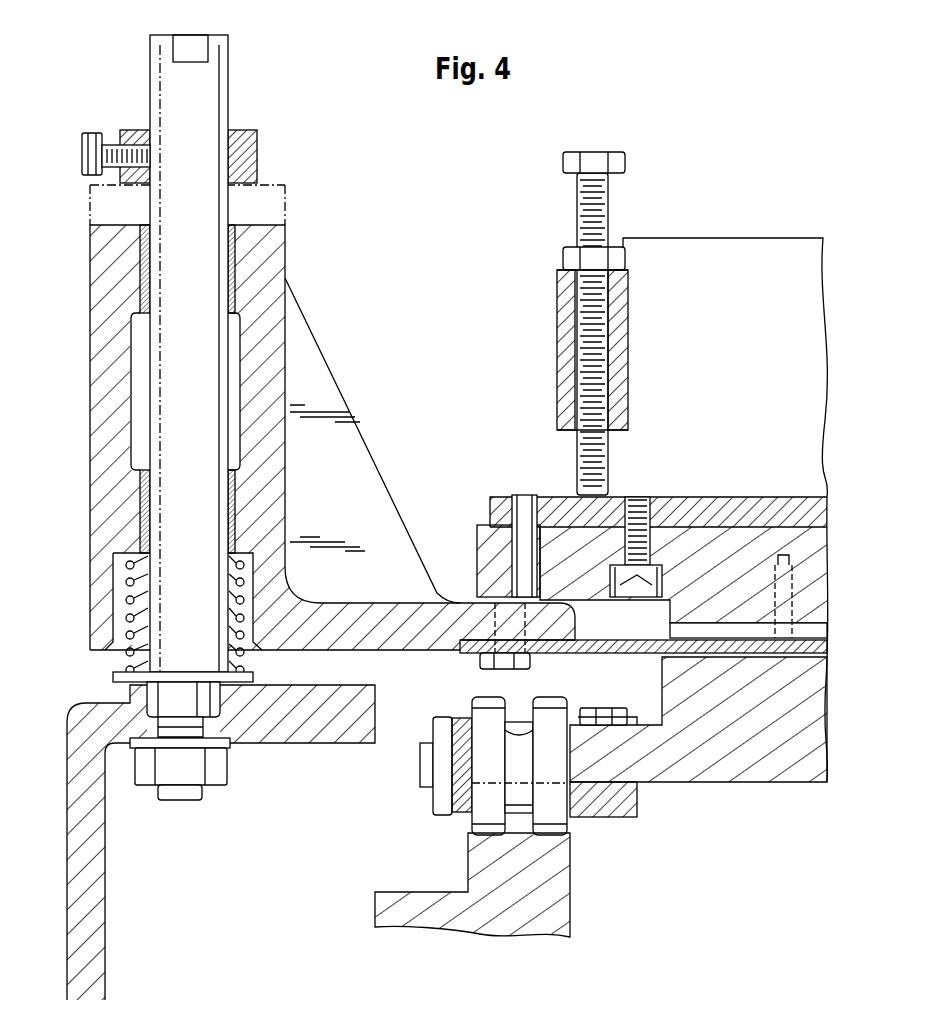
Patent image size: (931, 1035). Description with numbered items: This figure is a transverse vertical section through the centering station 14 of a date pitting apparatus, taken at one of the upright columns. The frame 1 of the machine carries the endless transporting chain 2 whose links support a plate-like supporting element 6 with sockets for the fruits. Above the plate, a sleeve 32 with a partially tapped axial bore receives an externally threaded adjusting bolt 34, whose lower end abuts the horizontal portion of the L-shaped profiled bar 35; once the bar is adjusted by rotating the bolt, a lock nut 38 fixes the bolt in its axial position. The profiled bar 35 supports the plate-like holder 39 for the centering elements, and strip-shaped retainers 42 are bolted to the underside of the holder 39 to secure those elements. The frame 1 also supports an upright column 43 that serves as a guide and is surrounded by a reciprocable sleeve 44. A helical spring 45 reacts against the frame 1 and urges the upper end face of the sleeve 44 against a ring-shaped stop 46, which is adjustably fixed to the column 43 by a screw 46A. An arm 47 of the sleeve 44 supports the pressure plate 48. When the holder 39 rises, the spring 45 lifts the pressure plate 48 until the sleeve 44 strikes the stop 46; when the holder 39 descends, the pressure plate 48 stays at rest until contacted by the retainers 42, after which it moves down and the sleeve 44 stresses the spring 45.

The frame 1 is at (90, 843).
The transporting chain 2 is at (436, 800).
The supporting element 6 is at (727, 755).
The centering station 14 is at (723, 232).
The sleeve 32 is at (560, 330).
The adjusting bolt 34 is at (588, 198).
The profiled bar 35 is at (713, 505).
The lock nut 38 is at (568, 257).
The holder 39 is at (485, 547).
The retainer 42 is at (672, 634).
The column 43 is at (215, 88).
The sleeve 44 is at (265, 258).
The helical spring 45 is at (244, 659).
The stop 46 is at (245, 160).
The screw 46A is at (92, 136).
The arm 47 is at (372, 630).
The pressure plate 48 is at (612, 653).